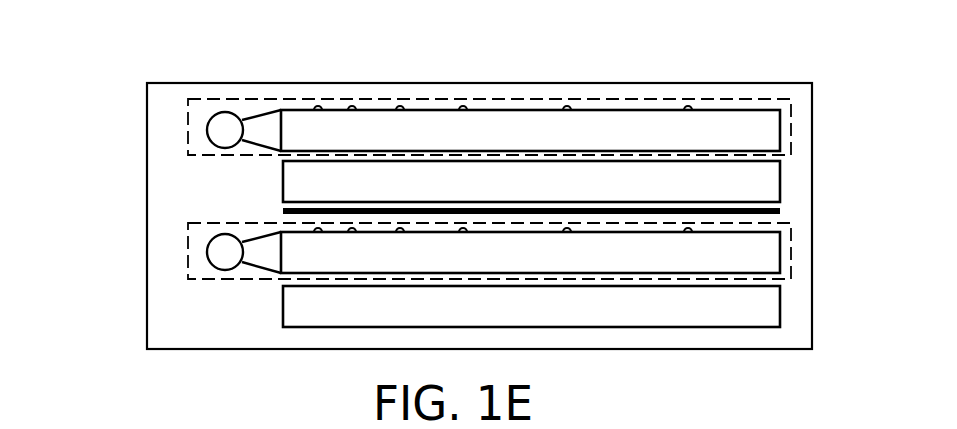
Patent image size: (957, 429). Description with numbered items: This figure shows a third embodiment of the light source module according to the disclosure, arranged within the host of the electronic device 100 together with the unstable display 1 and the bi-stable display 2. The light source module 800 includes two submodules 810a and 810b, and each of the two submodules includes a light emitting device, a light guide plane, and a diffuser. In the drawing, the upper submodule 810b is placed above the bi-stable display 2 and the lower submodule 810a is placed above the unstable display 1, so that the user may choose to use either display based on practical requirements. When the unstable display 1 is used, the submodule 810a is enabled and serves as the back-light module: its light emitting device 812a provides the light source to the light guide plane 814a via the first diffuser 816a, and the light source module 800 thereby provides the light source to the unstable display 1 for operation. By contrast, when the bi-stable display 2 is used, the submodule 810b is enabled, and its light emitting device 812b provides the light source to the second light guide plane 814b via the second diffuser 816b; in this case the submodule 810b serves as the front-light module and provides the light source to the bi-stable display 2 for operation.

The unstable display 1 is at (782, 308).
The bi-stable display 2 is at (782, 183).
The electronic device 100 is at (147, 328).
The light source module 800 is at (70, 237).
The submodule 810a is at (188, 248).
The submodule 810b is at (188, 124).
The light emitting device 812a is at (218, 265).
The light emitting device 812b is at (218, 130).
The light guide plane 814a is at (782, 253).
The second light guide plane 814b is at (782, 132).
The first diffuser 816a is at (260, 258).
The second diffuser 816b is at (268, 125).